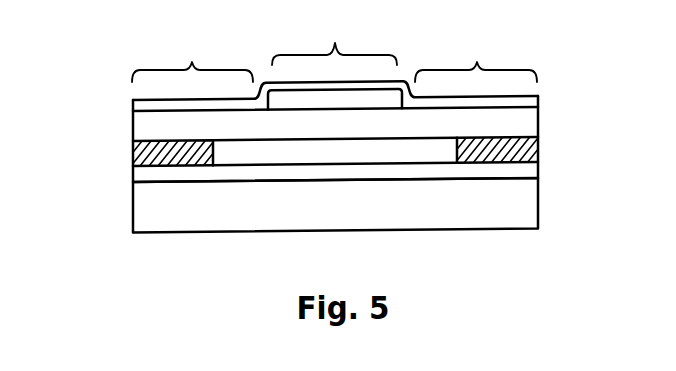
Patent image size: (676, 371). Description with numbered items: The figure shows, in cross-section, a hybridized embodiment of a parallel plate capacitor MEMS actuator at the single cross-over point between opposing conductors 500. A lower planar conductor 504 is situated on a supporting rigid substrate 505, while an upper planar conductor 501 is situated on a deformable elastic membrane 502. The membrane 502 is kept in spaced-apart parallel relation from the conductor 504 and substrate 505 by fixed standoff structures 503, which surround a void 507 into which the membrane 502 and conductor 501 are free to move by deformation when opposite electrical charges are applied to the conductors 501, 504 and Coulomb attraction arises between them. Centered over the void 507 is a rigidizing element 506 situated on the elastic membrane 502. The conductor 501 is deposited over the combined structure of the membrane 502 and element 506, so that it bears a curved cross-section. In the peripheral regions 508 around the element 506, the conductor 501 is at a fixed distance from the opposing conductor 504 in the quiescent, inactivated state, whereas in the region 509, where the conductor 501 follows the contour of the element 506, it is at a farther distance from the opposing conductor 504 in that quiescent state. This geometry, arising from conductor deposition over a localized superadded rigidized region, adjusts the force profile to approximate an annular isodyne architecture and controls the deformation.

The cross-over point between opposing conductors 500 is at (68, 92).
The planar conductor 501 is at (540, 102).
The deformable elastic membrane 502 is at (540, 110).
The fixed standoff structures 503 is at (133, 152).
The planar conductor 504 is at (540, 168).
The supporting rigid substrate 505 is at (540, 200).
The rigidizing element 506 is at (385, 98).
The void 507 is at (367, 153).
The peripheral regions 508 is at (334, 57).
The region following the contour of the rigidizing element 509 is at (334, 39).